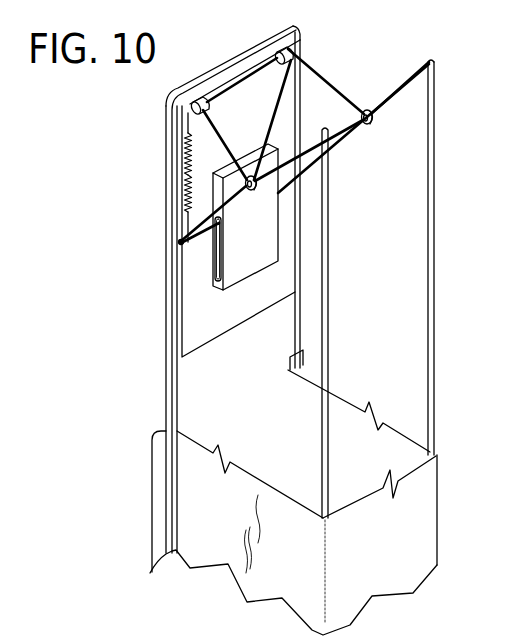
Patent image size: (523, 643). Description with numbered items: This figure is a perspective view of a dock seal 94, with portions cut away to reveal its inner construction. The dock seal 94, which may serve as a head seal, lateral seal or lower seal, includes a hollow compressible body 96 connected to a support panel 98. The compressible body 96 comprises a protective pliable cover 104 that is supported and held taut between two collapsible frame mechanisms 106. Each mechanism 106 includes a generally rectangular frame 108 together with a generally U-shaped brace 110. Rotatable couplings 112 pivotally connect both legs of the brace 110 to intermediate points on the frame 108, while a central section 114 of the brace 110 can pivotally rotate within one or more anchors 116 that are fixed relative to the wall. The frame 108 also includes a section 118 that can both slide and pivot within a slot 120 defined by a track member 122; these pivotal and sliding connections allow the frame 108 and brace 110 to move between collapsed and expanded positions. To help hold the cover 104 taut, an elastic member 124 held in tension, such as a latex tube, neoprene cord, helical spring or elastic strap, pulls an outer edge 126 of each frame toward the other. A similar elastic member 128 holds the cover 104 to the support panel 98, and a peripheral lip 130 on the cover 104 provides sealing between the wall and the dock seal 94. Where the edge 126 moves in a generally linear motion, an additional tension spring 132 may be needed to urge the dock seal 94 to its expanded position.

The dock seal 94 is at (453, 172).
The hollow compressible body 96 is at (450, 332).
The support panel 98 is at (180, 382).
The protective pliable cover 104 is at (397, 432).
The collapsible frame mechanism 106 is at (371, 171).
The frame 108 is at (397, 84).
The U-shaped brace 110 is at (186, 150).
The rotatable coupling 112 is at (255, 191).
The central section 114 is at (242, 78).
The anchor 116 is at (180, 84).
The section 118 is at (180, 245).
The slot 120 is at (217, 225).
The track member 122 is at (250, 283).
The elastic member 124 is at (436, 255).
The outer edge 126 is at (369, 109).
The elastic member 128 is at (208, 72).
The peripheral lip 130 is at (158, 517).
The tension spring 132 is at (188, 195).